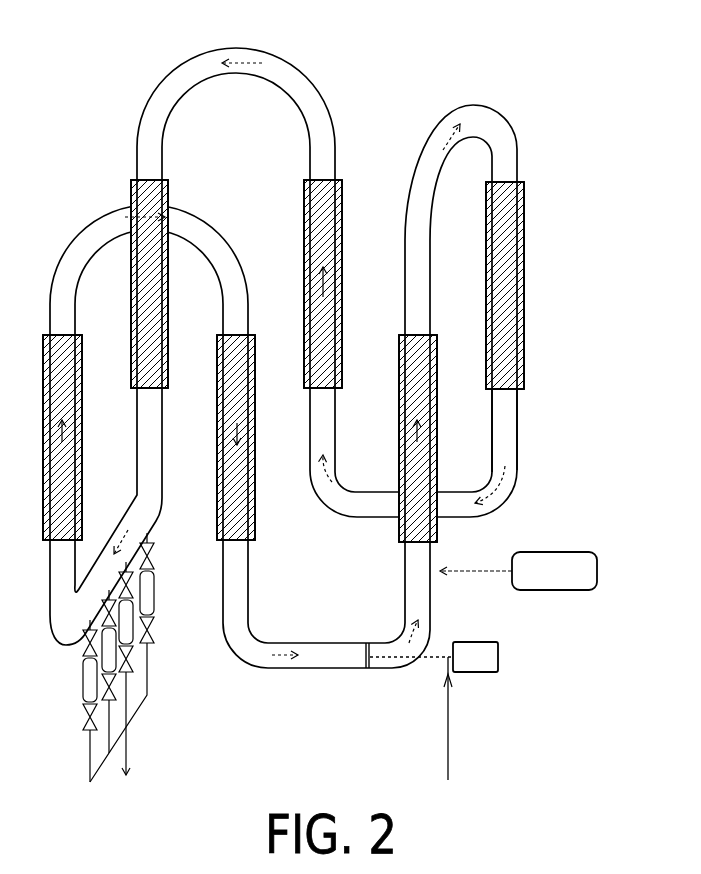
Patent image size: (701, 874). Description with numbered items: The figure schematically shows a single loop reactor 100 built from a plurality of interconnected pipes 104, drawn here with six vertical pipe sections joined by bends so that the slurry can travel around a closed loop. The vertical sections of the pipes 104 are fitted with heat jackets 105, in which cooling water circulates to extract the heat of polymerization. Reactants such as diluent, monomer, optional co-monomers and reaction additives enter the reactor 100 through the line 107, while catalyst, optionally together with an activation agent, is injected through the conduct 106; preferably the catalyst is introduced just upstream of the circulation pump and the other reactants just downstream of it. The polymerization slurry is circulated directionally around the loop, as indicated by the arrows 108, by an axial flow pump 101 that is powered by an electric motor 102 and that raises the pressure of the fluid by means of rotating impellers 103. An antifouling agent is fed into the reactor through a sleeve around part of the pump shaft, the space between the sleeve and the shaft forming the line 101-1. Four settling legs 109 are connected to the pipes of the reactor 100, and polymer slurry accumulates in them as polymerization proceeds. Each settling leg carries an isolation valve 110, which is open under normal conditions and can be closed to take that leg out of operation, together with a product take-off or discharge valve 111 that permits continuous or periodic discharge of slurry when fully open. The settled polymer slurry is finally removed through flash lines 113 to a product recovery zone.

The loop reactor 100 is at (572, 103).
The axial flow pump 101 is at (420, 660).
The line for feeding the anti-fouling agent 101-1 is at (450, 745).
The electric motor 102 is at (478, 673).
The rotating impellers 103 is at (363, 670).
The interconnected pipes 104 is at (521, 433).
The heat jackets 105 is at (530, 298).
The conduct 106 is at (326, 640).
The line 107 is at (480, 573).
The arrows 108 is at (440, 150).
The settling legs 109 is at (82, 679).
The isolation valve 110 is at (152, 548).
The discharge valves 111 is at (82, 722).
The flash lines 113 is at (127, 741).